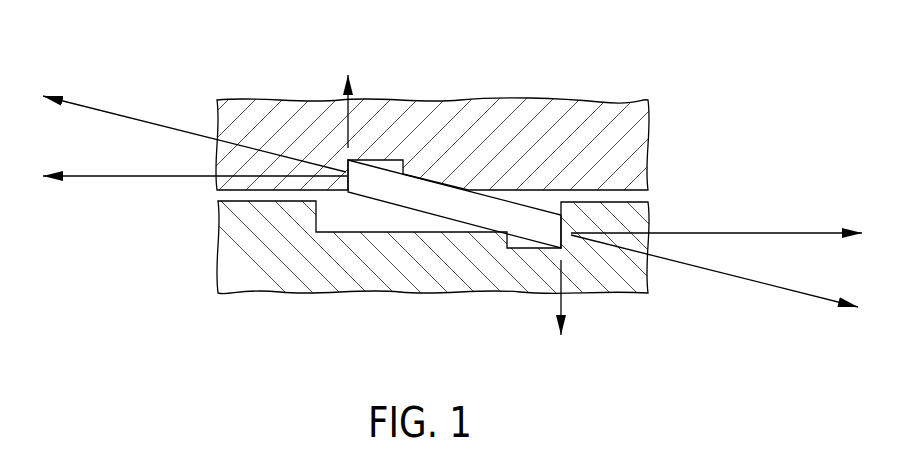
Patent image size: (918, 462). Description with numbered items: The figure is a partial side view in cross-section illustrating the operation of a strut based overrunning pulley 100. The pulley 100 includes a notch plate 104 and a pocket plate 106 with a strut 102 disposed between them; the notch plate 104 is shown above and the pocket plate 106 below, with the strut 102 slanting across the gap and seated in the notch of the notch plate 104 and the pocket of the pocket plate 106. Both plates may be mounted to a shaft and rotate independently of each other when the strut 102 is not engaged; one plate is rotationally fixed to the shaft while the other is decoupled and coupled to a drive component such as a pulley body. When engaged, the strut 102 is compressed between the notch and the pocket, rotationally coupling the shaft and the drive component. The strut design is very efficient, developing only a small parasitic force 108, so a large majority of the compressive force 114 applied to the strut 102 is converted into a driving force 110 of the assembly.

The strut based overrunning pulley 100 is at (452, 184).
The strut 102 is at (417, 176).
The notch plate 104 is at (564, 156).
The pocket plate 106 is at (226, 251).
The parasitic force 108 is at (560, 302).
The driving force 110 is at (88, 178).
The compressive force 114 is at (737, 278).